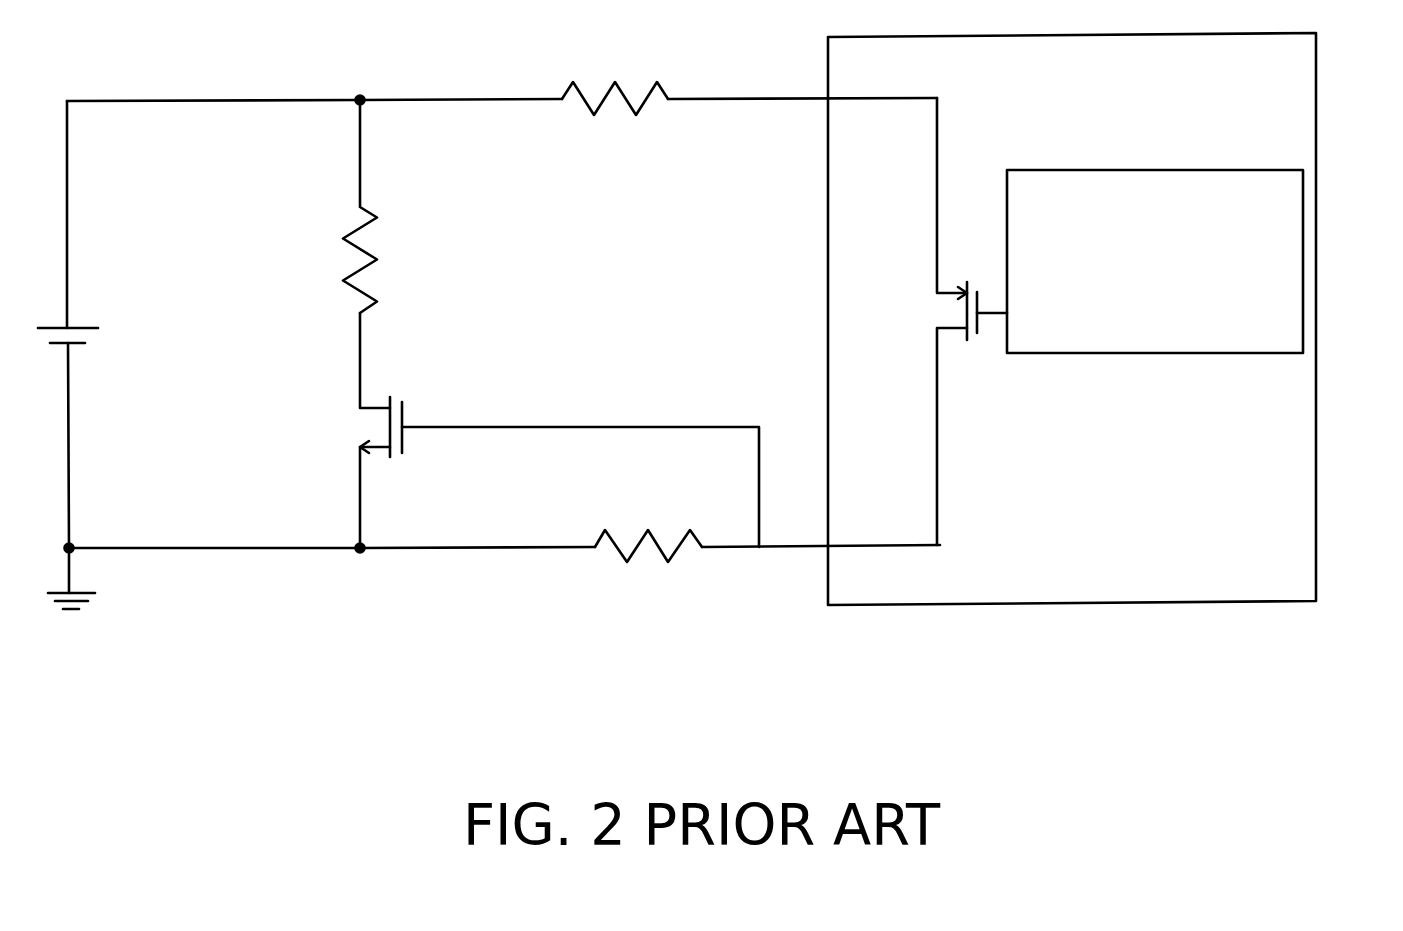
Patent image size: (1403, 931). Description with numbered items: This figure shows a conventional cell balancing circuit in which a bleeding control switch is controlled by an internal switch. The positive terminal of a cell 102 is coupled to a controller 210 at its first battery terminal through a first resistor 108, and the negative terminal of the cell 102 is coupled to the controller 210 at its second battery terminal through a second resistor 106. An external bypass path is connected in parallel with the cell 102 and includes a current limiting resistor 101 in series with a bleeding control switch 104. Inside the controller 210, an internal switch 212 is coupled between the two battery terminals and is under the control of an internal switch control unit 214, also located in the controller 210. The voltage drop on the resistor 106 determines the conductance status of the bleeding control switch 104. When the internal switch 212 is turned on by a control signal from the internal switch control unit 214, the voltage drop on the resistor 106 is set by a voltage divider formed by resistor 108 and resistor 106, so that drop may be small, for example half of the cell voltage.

The current limiting resistor 101 is at (370, 307).
The cell 102 is at (72, 345).
The bleeding control switch 104 is at (405, 438).
The second resistor 106 is at (678, 548).
The first resistor 108 is at (648, 100).
The controller 210 is at (1313, 82).
The internal switch 212 is at (968, 333).
The internal switch control unit 214 is at (1183, 353).